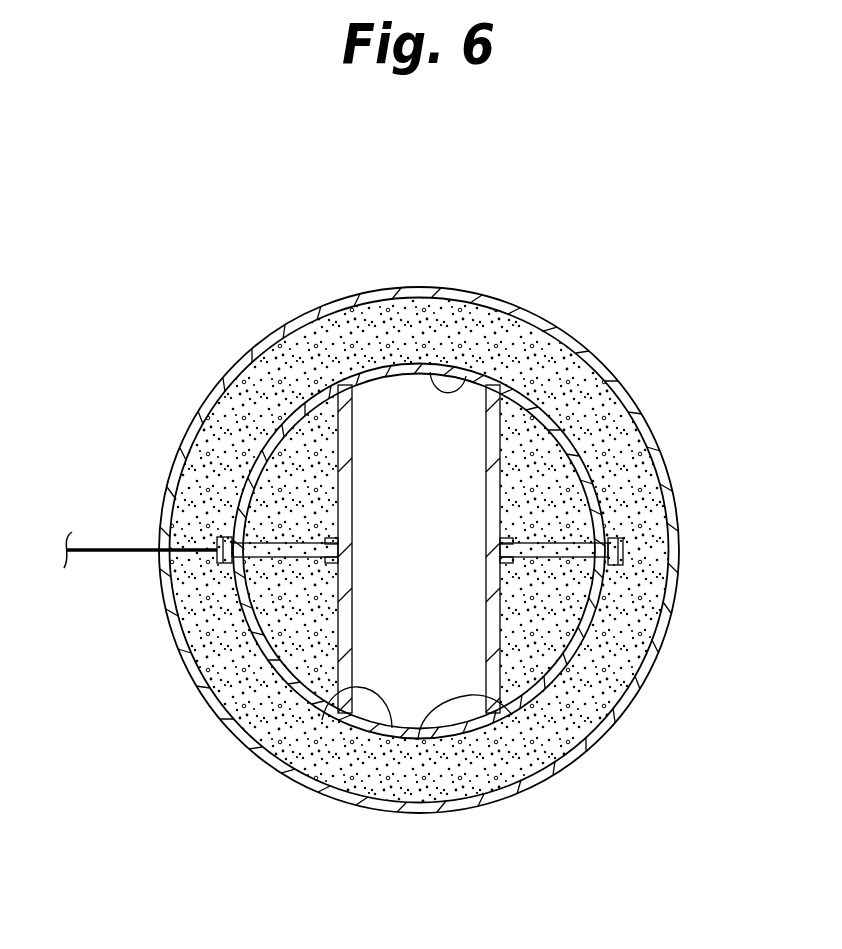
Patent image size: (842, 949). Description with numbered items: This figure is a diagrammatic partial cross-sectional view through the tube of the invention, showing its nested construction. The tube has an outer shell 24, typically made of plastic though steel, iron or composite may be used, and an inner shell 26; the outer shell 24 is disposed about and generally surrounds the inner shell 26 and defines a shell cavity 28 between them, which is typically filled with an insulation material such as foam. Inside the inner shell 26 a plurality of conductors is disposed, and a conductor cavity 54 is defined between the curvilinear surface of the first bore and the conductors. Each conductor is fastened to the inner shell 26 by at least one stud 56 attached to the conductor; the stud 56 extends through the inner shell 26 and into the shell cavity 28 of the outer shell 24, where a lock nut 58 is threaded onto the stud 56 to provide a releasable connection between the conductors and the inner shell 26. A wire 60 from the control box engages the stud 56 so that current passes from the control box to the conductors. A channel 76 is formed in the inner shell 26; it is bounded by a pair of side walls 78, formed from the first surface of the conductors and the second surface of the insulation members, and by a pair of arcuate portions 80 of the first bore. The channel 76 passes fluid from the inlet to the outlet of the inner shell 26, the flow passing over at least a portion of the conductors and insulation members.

The outer shell 24 is at (172, 642).
The inner shell 26 is at (583, 460).
The shell cavity 28 is at (237, 420).
The conductor cavity 54 is at (300, 640).
The stud 56 is at (567, 542).
The lock nut 58 is at (223, 563).
The wire 60 is at (132, 549).
The channel 76 is at (417, 413).
The side walls 78 is at (392, 728).
The arcuate portions 80 is at (462, 380).